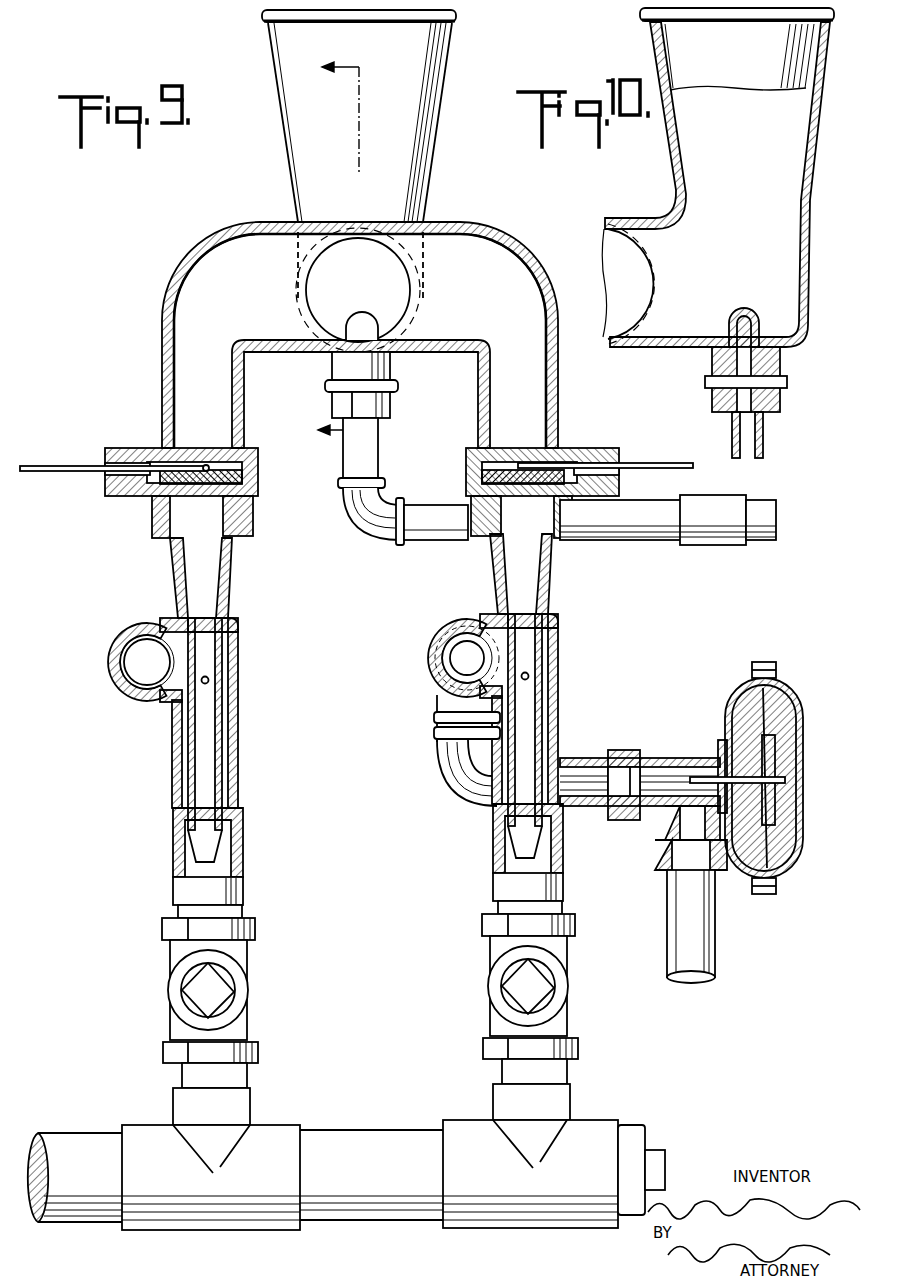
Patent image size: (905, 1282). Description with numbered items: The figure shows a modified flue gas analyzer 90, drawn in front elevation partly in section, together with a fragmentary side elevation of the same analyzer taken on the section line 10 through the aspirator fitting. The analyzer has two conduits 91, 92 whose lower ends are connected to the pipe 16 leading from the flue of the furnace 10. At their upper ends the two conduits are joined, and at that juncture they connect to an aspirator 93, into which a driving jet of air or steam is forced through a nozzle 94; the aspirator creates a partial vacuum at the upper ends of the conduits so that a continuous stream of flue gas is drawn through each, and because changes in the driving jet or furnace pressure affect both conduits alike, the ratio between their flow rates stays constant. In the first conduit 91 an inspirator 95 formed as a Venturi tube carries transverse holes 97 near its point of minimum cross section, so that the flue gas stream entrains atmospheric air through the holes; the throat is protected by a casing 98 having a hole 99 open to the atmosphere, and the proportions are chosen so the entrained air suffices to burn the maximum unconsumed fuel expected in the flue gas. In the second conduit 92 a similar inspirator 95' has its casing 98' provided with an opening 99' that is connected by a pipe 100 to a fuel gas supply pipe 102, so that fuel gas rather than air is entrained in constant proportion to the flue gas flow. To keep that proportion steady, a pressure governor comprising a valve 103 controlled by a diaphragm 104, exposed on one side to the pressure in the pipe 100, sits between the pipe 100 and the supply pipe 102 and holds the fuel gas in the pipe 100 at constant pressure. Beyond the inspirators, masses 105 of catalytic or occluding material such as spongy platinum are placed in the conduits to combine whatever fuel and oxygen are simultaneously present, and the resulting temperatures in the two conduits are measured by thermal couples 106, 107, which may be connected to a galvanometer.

In FIG. 9, the furnace 10 is at (340, 267).
In FIG. 9, the pipe 16 is at (78, 1132).
In FIG. 9, the gas analyzer 90 is at (190, 262).
In FIG. 9, the conduit 91 is at (185, 912).
In FIG. 9, the conduit 92 is at (560, 905).
In FIG. 9, the aspirator 93 is at (405, 211).
In FIG. 10, the aspirator 93 is at (806, 258).
In FIG. 9, the nozzle 94 is at (367, 322).
In FIG. 10, the nozzle 94 is at (746, 312).
In FIG. 9, the inspirator 95 is at (185, 578).
In FIG. 9, the inspirator 95' is at (493, 574).
In FIG. 9, the transverse holes 97 is at (224, 680).
In FIG. 9, the casing 98 is at (216, 707).
In FIG. 9, the casing 98' is at (470, 709).
In FIG. 9, the hole 99 is at (123, 662).
In FIG. 9, the opening 99' is at (444, 658).
In FIG. 9, the pipe 100 is at (572, 768).
In FIG. 9, the fuel gas supply pipe 102 is at (700, 945).
In FIG. 9, the valve 103 is at (655, 760).
In FIG. 9, the diaphragm 104 is at (770, 720).
In FIG. 9, the mass of catalytic or occluding material 105 is at (204, 478).
In FIG. 9, the thermal couple 106 is at (70, 465).
In FIG. 9, the thermal couple 107 is at (668, 462).